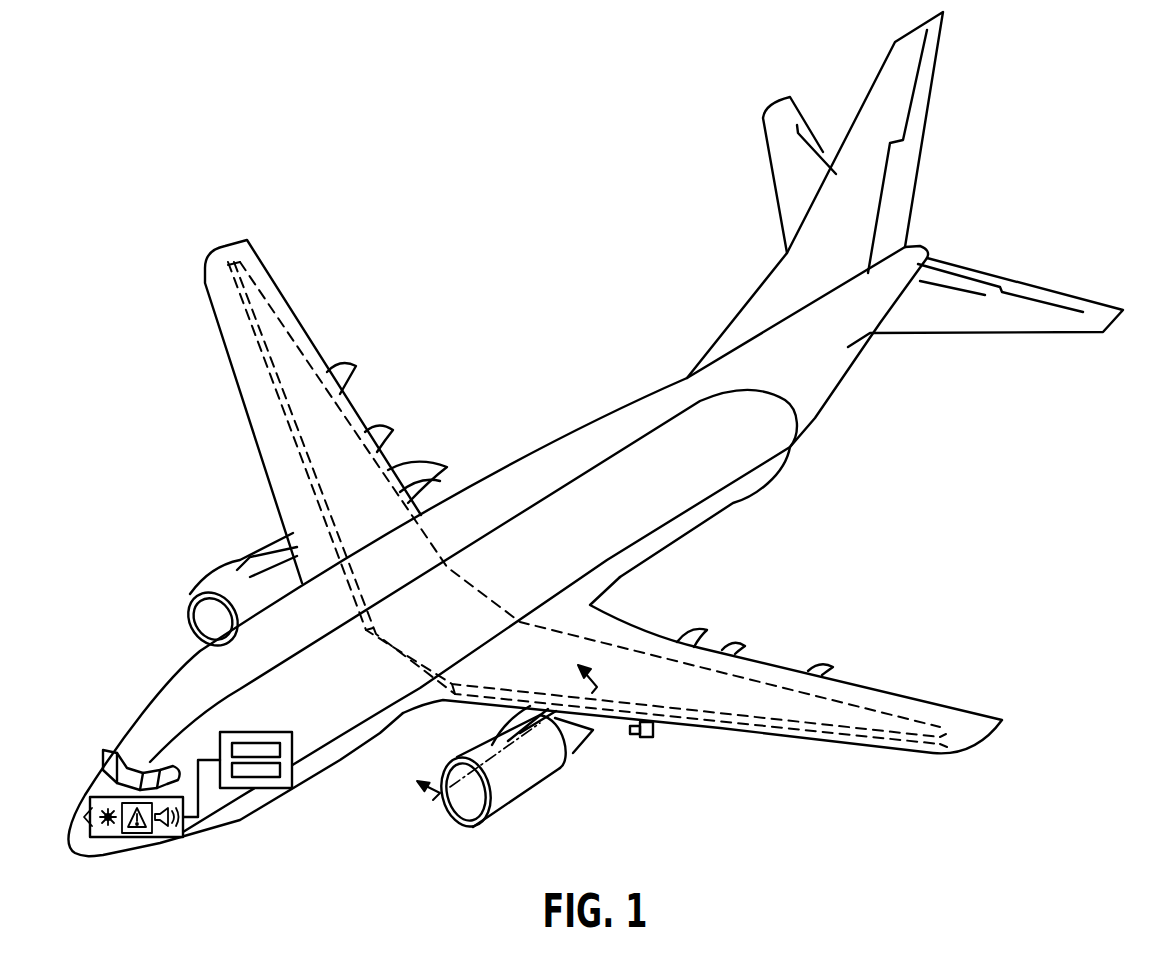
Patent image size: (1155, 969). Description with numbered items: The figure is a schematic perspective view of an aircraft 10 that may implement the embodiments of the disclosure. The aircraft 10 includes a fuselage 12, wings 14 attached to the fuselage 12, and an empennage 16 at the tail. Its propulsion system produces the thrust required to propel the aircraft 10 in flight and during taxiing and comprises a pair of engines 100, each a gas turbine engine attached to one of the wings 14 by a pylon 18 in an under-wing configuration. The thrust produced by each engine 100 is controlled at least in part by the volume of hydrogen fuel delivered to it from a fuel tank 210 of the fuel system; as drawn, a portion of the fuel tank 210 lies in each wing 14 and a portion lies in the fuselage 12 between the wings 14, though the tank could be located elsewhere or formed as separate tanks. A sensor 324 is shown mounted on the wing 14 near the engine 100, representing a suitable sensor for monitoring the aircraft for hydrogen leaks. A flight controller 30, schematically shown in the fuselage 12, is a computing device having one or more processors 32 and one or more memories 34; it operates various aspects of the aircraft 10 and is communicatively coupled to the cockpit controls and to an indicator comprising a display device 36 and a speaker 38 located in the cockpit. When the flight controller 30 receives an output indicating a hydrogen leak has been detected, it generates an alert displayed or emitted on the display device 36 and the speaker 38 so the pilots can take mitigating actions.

The aircraft 10 is at (595, 457).
The fuselage 12 is at (652, 516).
The wings 14 is at (222, 303).
The empennage 16 is at (942, 168).
The pylon 18 is at (556, 720).
The engine 100 is at (557, 799).
The fuel tank 210 is at (770, 700).
The sensor 324 is at (648, 738).
The flight controller 30 is at (278, 804).
The processors 32 is at (280, 747).
The memories 34 is at (280, 770).
The display device 36 is at (142, 850).
The speaker 38 is at (168, 837).